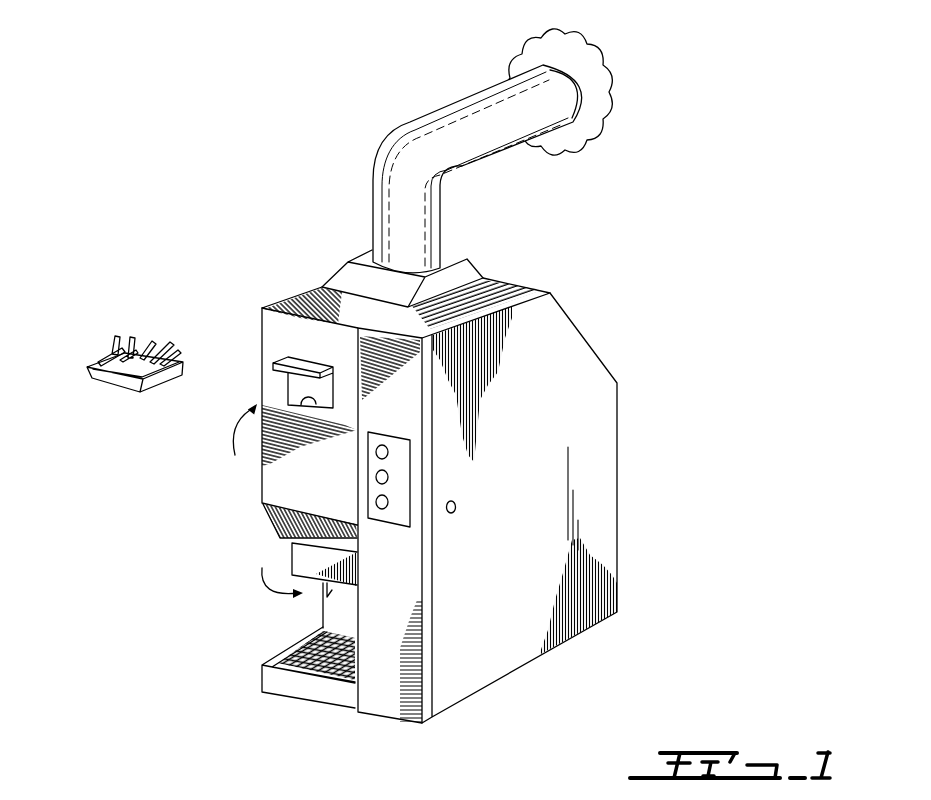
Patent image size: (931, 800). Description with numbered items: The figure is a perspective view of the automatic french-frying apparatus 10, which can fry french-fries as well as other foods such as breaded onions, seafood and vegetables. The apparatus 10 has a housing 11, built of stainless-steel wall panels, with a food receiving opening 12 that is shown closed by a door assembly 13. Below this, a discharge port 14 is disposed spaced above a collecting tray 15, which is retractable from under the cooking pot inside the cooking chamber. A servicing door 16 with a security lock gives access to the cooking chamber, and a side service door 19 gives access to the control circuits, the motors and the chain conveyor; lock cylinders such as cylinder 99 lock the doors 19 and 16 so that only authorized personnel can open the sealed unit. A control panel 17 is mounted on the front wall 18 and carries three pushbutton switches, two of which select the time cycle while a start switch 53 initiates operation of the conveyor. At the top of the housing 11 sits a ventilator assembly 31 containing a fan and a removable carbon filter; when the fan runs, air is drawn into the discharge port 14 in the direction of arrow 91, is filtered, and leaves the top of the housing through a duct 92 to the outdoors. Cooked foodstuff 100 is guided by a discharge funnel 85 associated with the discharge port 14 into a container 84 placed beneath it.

The automatic french-frying apparatus 10 is at (668, 266).
The housing 11 is at (290, 283).
The food receiving opening 12 is at (313, 408).
The door assembly 13 is at (292, 387).
The discharge port 14 is at (322, 612).
The collecting tray 15 is at (298, 653).
The servicing door 16 is at (278, 490).
The control panel 17 is at (403, 455).
The front wall 18 is at (400, 650).
The side service door 19 is at (593, 392).
The ventilator assembly 31 is at (457, 278).
The start switch 53 is at (379, 504).
The container 84 is at (112, 378).
The discharge funnel 85 is at (303, 562).
The arrow 91 is at (262, 590).
The duct 92 is at (373, 183).
The lock cylinder 99 is at (458, 507).
The cooked foodstuff 100 is at (112, 358).